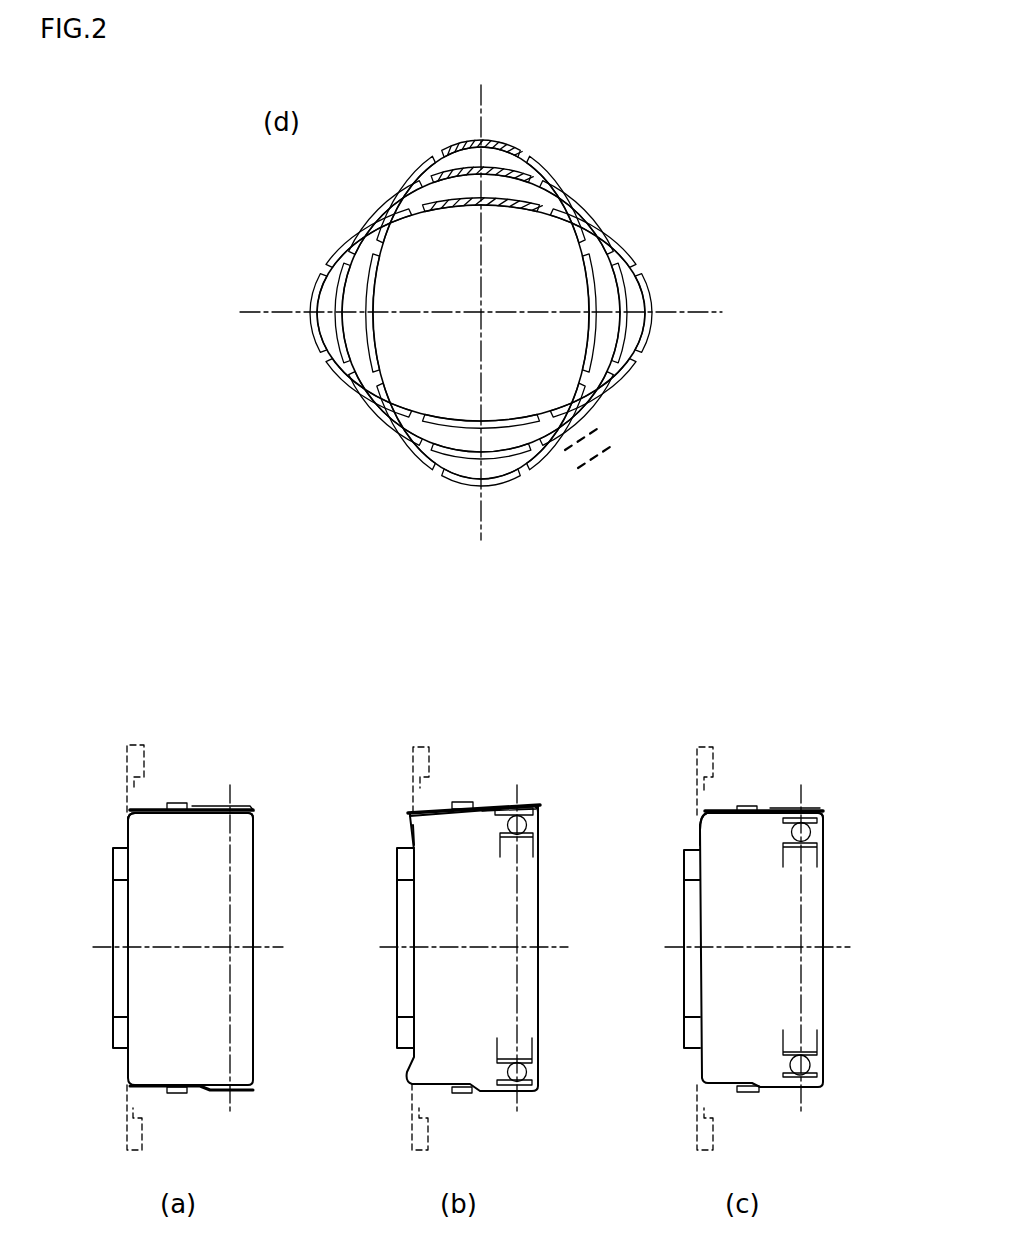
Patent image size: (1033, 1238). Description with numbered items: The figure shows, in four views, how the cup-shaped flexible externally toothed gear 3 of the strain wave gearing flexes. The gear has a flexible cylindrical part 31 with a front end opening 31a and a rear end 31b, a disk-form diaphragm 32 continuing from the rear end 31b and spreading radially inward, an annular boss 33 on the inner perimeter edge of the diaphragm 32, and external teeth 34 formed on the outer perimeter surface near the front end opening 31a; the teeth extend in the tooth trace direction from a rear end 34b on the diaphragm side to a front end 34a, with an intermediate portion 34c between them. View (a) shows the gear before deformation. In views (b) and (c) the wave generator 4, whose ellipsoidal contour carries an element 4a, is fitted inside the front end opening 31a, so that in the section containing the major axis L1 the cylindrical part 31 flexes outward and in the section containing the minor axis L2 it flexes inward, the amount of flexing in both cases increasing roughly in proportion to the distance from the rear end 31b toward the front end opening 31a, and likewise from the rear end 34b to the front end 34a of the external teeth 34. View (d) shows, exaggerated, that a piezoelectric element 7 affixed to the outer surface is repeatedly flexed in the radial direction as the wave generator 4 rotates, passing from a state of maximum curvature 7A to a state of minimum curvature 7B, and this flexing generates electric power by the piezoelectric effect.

The flexible externally toothed gear 3 is at (157, 726).
The wave generator 4 is at (542, 850).
The ball 4a is at (527, 826).
The piezoelectric element 7 is at (436, 172).
The state of maximum curvature 7A is at (460, 144).
The state of minimum curvature 7B is at (440, 198).
The flexible cylindrical part 31 is at (160, 815).
The front end opening 31a is at (255, 812).
The rear end 31b is at (128, 814).
The diaphragm 32 is at (127, 835).
The annular boss 33 is at (117, 866).
The external teeth 34 is at (230, 798).
The front end of the external teeth 34a is at (250, 807).
The rear end of the external teeth 34b is at (194, 806).
The end plate middle portion 34c is at (214, 804).
The major axis L1 is at (483, 94).
The minor axis L2 is at (700, 314).